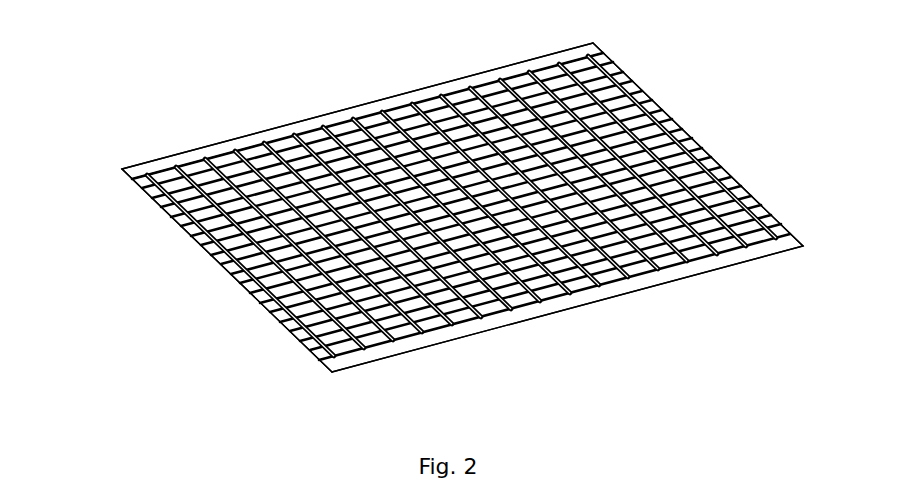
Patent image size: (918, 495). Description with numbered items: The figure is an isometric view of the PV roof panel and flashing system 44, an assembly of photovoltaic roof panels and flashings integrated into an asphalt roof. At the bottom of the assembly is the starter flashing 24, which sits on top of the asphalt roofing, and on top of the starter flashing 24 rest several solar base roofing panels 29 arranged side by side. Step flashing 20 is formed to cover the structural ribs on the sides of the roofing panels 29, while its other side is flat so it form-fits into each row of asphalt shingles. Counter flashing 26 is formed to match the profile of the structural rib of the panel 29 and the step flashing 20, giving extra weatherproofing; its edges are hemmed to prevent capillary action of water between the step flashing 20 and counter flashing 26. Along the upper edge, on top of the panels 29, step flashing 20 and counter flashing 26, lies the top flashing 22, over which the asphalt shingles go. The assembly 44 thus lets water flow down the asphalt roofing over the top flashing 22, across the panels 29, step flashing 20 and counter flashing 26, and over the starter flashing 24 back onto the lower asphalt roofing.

The step flashing 20 is at (158, 201).
The top flashing 22 is at (130, 167).
The starter flashing 24 is at (338, 370).
The counter flashing 26 is at (165, 211).
The solar base roofing panel 29 is at (352, 357).
The PV roof panel and flashing system 44 is at (352, 101).